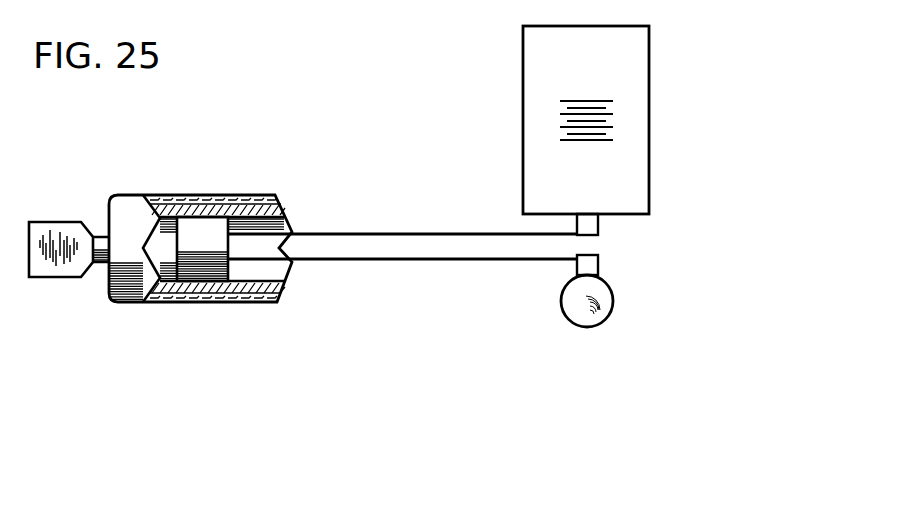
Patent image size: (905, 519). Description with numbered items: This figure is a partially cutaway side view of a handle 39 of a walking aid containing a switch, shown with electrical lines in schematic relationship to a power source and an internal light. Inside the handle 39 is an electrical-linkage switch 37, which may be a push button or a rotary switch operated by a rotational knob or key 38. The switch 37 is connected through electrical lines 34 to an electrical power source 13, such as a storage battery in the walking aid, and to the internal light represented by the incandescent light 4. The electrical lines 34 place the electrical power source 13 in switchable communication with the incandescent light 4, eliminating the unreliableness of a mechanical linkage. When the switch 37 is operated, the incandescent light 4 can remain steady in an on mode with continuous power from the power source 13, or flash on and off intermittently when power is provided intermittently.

The rotational knob or key 38 is at (52, 243).
The handle 39 is at (146, 198).
The electrical-linkage switch 37 is at (202, 240).
The electrical lines 34 is at (458, 257).
The electrical power source 13 is at (650, 214).
The incandescent light 4 is at (614, 293).